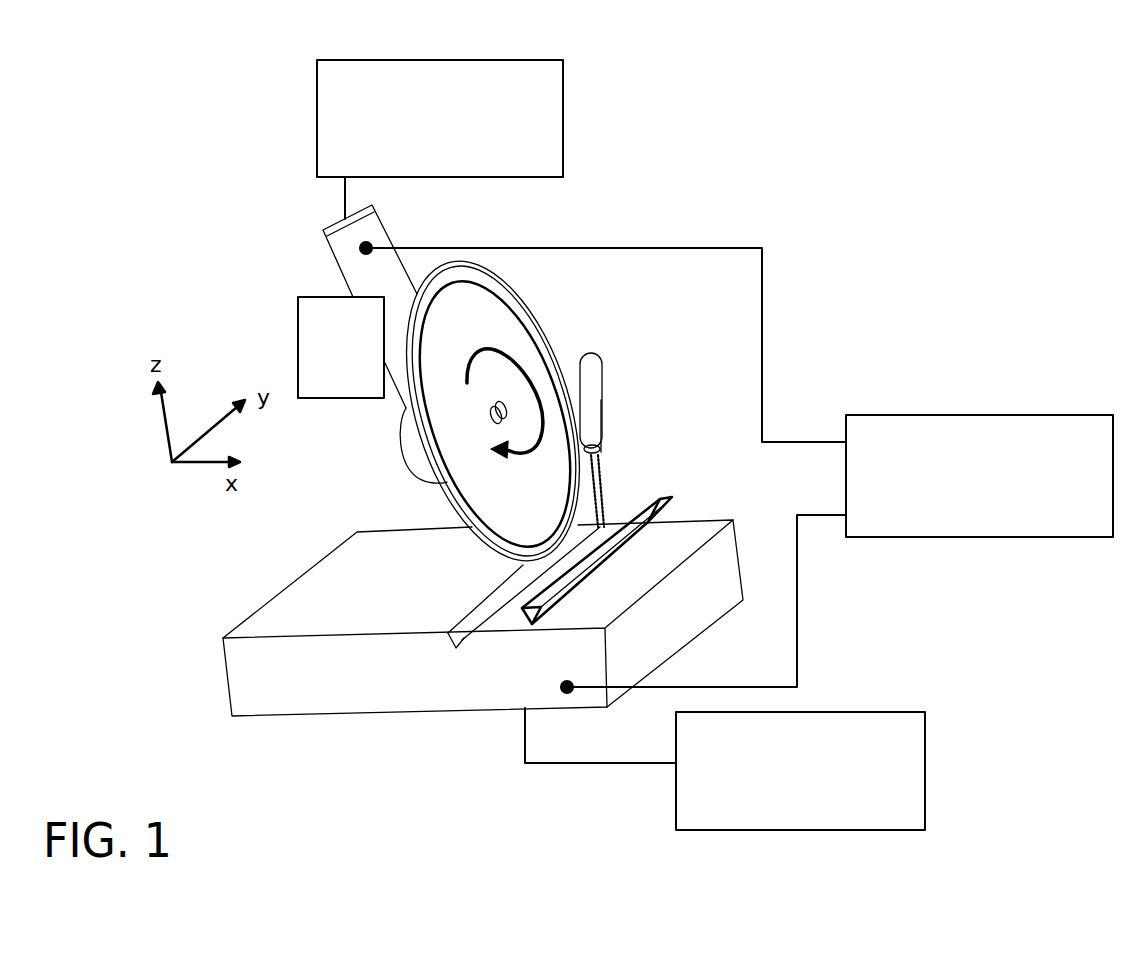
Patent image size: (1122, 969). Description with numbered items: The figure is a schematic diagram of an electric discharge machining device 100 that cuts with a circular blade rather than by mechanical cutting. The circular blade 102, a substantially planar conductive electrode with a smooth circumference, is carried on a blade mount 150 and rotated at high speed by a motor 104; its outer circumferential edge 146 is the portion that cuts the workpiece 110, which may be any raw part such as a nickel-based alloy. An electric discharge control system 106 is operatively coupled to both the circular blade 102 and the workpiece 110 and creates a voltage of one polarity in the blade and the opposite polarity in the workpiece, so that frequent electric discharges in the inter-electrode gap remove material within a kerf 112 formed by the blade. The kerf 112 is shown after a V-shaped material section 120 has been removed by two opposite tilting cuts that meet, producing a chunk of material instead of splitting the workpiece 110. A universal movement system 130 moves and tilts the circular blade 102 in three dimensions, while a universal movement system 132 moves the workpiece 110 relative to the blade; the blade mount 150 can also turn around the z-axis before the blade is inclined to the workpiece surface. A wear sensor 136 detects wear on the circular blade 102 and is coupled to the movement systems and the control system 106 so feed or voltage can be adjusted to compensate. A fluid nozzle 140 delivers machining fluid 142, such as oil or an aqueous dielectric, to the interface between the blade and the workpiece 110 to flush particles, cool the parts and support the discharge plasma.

The electric discharge machining (EDM) device 100 is at (288, 155).
The circular blade 102 is at (518, 410).
The motor 104 is at (423, 455).
The electric discharge control system 106 is at (736, 467).
The workpiece 110 is at (483, 618).
The kerf 112 is at (453, 637).
The V-shaped material section 120 is at (660, 497).
The universal movement system 130 is at (440, 139).
The universal movement system 132 is at (725, 769).
The wear sensor 136 is at (341, 347).
The fluid nozzle 140 is at (592, 400).
The machining fluid 142 is at (595, 479).
The outer circumferential edge 146 is at (502, 292).
The blade mount 150 is at (345, 306).